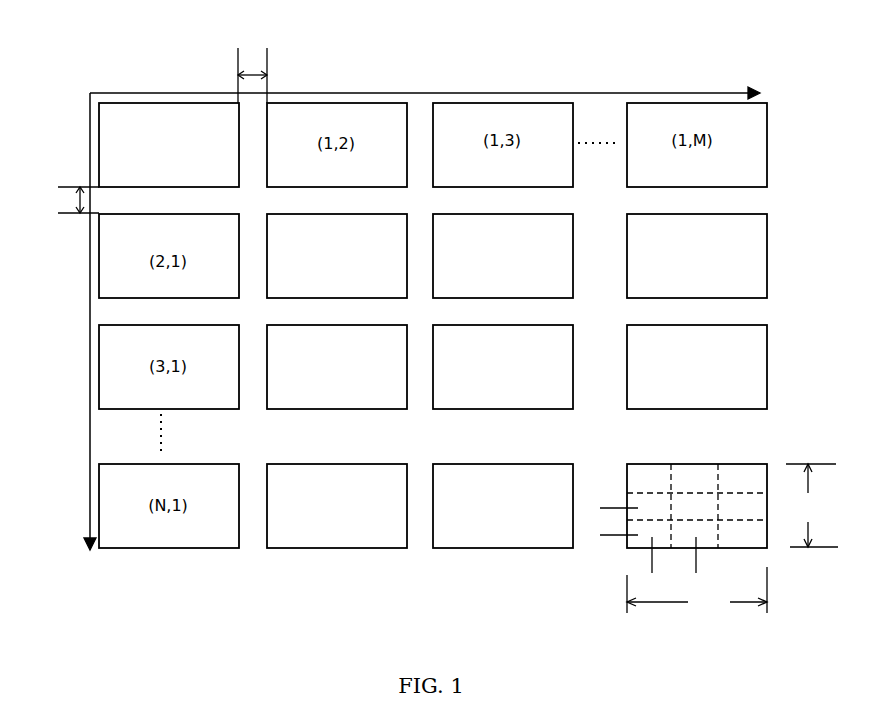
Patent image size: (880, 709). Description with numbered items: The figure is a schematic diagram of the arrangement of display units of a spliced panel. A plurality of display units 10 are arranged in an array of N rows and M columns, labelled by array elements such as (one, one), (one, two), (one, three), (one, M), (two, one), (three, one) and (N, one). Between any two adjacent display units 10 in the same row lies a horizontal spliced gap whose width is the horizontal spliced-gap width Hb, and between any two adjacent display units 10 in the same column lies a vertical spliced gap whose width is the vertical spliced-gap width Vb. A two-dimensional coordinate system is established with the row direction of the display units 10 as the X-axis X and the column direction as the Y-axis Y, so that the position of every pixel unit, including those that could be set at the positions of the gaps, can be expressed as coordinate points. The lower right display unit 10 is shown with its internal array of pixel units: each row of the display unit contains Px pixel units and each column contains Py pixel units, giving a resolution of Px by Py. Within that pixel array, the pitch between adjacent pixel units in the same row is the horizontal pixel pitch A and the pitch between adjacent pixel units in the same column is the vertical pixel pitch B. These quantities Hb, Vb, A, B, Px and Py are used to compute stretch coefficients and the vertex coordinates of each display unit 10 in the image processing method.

The display unit 10 is at (112, 131).
The horizontal spliced-gap width Hb is at (252, 75).
The vertical spliced-gap width Vb is at (78, 200).
The horizontal pixel pitch A is at (674, 557).
The vertical pixel pitch B is at (619, 521).
The number of pixel units per row Px is at (697, 591).
The number of pixel units per column Py is at (812, 505).
The X-axis X is at (425, 81).
The Y-axis Y is at (73, 321).